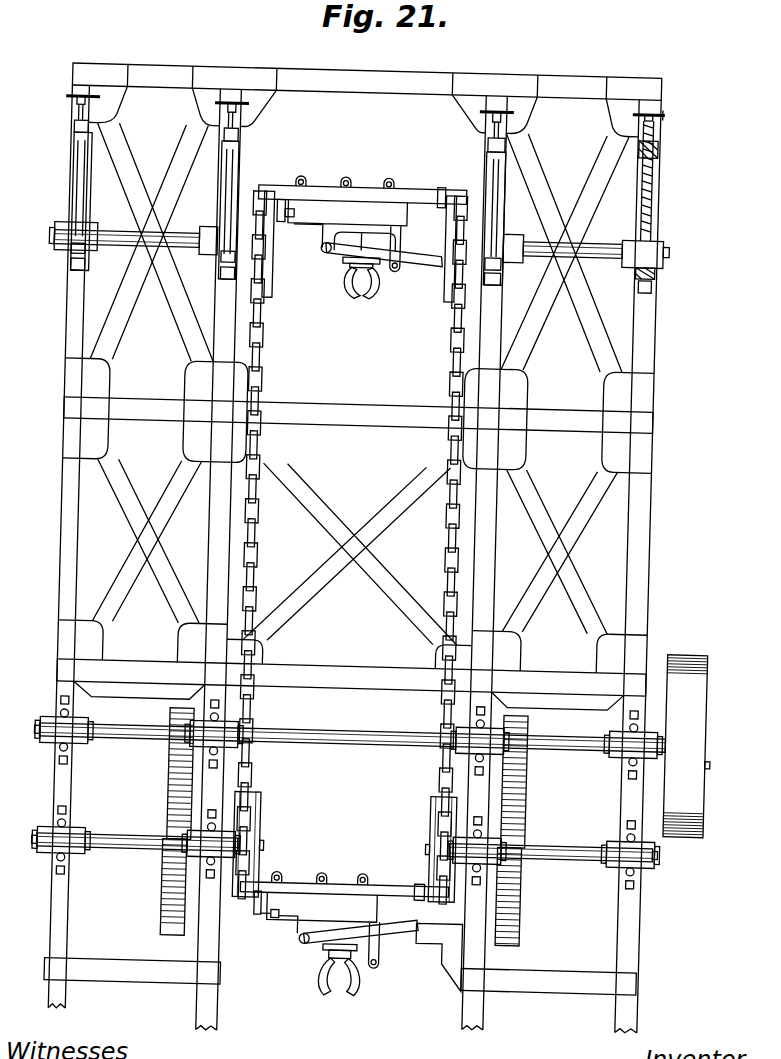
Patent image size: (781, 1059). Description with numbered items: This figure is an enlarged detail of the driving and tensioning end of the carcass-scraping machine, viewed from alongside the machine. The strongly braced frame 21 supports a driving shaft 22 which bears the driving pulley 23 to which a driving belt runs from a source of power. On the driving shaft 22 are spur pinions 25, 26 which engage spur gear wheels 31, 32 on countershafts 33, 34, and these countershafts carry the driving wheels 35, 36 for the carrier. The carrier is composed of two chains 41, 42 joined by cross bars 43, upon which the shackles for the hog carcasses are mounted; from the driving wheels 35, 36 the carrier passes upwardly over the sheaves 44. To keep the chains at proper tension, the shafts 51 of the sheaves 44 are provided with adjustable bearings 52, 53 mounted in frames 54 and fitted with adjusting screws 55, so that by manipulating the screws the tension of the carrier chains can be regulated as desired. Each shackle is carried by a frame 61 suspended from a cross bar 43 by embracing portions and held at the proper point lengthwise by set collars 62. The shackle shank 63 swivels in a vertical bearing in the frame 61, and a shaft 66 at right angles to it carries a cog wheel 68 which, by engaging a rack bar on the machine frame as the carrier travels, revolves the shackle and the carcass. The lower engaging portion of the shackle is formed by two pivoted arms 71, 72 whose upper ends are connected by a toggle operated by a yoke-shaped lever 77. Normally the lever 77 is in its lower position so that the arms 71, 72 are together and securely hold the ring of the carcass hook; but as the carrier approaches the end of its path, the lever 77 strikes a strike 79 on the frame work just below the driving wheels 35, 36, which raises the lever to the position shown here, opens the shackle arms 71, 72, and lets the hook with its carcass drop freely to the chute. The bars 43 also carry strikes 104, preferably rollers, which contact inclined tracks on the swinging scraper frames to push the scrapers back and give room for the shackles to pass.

The frame 21 is at (208, 1030).
The driving shaft 22 is at (710, 753).
The driving pulley 23 is at (698, 838).
The spur pinion 25 is at (528, 725).
The spur pinion 26 is at (175, 708).
The spur gear wheel 31 is at (523, 925).
The spur gear wheel 32 is at (163, 910).
The countershaft 33 is at (553, 852).
The countershaft 34 is at (122, 835).
The driving wheel 35 is at (437, 812).
The driving wheel 36 is at (256, 815).
The chain 41 is at (448, 568).
The chain 42 is at (265, 570).
The cross bar 43 is at (392, 882).
The sheave 44 is at (452, 283).
The shaft 51 is at (605, 258).
The adjustable bearing 52 is at (513, 268).
The adjustable bearing 53 is at (627, 242).
The frame 54 is at (660, 148).
The adjusting screw 55 is at (654, 131).
The frame 61 is at (336, 584).
The set collar 62 is at (377, 877).
The shackle shank 63 is at (397, 242).
The shaft 66 is at (257, 917).
The cog wheel 68 is at (262, 921).
The shackle arm 71 is at (353, 994).
The shackle arm 72 is at (328, 998).
The yoke-shaped lever 77 is at (392, 934).
The strike 79 is at (425, 943).
The strike 104 is at (436, 893).